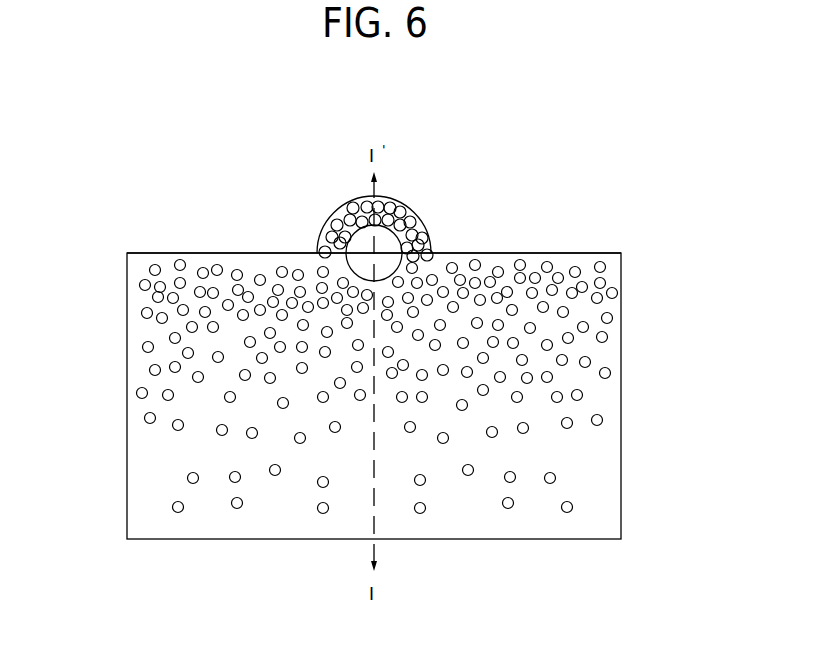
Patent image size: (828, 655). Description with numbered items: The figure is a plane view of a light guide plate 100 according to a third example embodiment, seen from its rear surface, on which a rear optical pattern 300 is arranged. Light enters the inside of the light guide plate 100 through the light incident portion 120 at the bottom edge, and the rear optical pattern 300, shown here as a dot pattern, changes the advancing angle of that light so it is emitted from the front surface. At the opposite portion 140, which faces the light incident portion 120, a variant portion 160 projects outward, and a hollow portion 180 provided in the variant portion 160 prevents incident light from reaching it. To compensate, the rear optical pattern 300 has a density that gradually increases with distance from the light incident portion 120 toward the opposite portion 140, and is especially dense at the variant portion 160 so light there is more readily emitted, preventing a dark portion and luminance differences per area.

The light guide plate 100 is at (93, 112).
The light incident portion 120 is at (590, 539).
The opposite portion 140 is at (610, 253).
The variant portion 160 is at (412, 207).
The hollow portion 180 is at (401, 248).
The rear optical pattern 300 is at (583, 394).